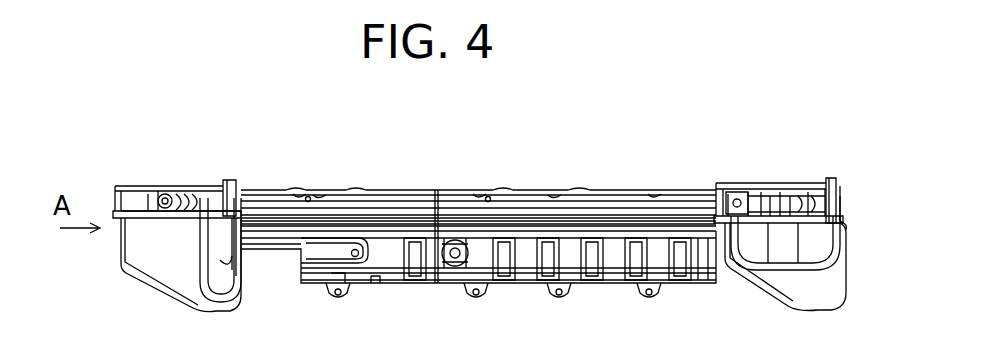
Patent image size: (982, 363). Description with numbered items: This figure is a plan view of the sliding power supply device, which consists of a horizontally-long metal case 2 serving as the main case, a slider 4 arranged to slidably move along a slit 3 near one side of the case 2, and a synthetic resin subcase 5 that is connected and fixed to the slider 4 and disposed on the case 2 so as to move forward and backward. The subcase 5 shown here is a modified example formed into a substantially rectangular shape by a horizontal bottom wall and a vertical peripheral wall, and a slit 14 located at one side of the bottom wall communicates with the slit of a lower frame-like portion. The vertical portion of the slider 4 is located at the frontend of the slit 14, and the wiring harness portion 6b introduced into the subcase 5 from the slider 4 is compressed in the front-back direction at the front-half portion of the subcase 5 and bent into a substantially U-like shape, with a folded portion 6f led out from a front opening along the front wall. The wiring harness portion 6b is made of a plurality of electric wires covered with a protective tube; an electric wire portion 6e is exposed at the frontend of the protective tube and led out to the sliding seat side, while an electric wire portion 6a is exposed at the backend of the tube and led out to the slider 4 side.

The case 2 is at (510, 282).
The slit 3 is at (508, 180).
The slider 4 is at (738, 190).
The subcase 5 is at (173, 298).
The electric wire portion 6a is at (727, 190).
The wiring harness portion 6b is at (200, 292).
The electric wire portion 6e is at (847, 190).
The folded portion 6f is at (217, 262).
The slit 14 is at (138, 192).